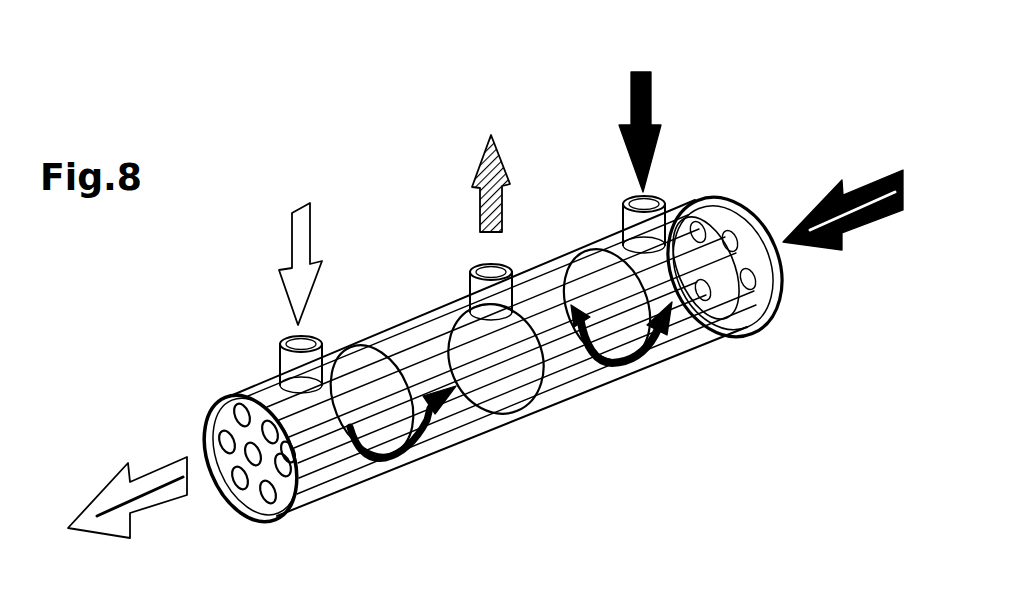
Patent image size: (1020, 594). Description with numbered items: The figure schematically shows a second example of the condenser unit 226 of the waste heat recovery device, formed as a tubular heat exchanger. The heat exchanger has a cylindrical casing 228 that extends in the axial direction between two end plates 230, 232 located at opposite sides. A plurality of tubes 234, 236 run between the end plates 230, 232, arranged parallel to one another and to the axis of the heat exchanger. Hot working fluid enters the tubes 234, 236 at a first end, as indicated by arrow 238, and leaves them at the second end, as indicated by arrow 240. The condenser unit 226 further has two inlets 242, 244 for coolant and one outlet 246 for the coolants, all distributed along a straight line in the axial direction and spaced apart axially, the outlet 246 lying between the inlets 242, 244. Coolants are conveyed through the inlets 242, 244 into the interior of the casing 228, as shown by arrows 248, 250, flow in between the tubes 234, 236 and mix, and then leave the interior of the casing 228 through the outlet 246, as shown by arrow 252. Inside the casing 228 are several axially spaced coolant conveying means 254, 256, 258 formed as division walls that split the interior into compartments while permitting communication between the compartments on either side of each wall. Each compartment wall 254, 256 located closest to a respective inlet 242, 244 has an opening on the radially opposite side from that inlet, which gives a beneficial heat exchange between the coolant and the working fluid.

The condenser unit 226 is at (524, 76).
The cylindrical casing 228 is at (700, 198).
The end plate 230 is at (747, 213).
The end plate 232 is at (253, 498).
The tube 234 is at (680, 318).
The tube 236 is at (705, 318).
The arrow 238 is at (857, 192).
The arrow 240 is at (158, 475).
The inlet 242 is at (623, 204).
The inlet 244 is at (282, 350).
The outlet 246 is at (472, 278).
The arrow 248 is at (633, 123).
The arrow 250 is at (293, 255).
The arrow 252 is at (480, 187).
The coolant conveying means 254 is at (408, 441).
The coolant conveying means 256 is at (640, 347).
The coolant conveying means 258 is at (533, 388).